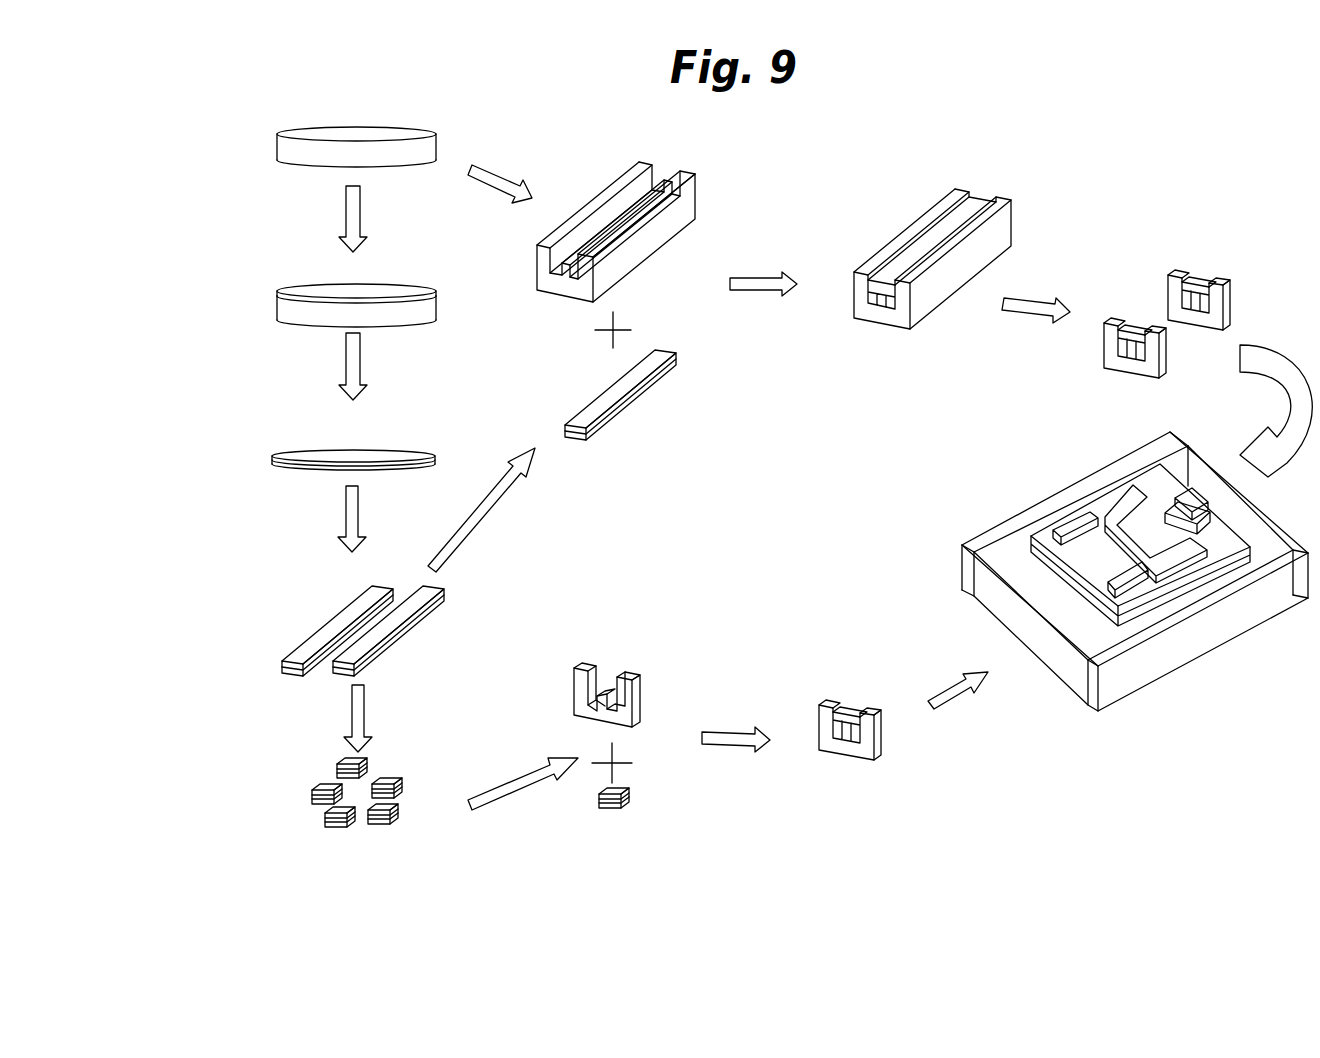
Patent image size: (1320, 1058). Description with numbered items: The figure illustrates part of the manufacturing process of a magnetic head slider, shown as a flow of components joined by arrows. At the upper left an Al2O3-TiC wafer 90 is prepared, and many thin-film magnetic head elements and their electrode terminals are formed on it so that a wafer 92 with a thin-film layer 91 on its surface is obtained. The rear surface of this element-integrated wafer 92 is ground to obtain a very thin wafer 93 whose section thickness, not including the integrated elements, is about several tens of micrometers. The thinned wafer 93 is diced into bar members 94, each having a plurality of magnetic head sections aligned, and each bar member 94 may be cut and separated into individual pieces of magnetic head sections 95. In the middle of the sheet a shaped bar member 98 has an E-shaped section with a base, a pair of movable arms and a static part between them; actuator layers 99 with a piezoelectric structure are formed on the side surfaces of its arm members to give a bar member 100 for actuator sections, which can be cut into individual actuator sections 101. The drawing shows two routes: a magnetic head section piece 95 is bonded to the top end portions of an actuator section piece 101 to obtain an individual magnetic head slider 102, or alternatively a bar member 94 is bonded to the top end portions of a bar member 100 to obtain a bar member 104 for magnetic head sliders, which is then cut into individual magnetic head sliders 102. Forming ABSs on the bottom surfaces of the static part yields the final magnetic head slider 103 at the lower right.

The Al2O3-TiC wafer 90 is at (437, 141).
The thin-film layer 91 is at (437, 291).
The element-integrated wafer 92 is at (345, 297).
The thinned wafer 93 is at (265, 457).
The bar member 94 is at (277, 638).
The magnetic head section 95 is at (372, 762).
The shaped bar member 98 is at (563, 283).
The actuator layer 99 is at (542, 260).
The bar member for actuator sections 100 is at (792, 240).
The actuator section 101 is at (613, 652).
The magnetic head slider 102 is at (1130, 303).
The final magnetic head slider 103 is at (1055, 702).
The bar member for magnetic head sliders 104 is at (988, 182).